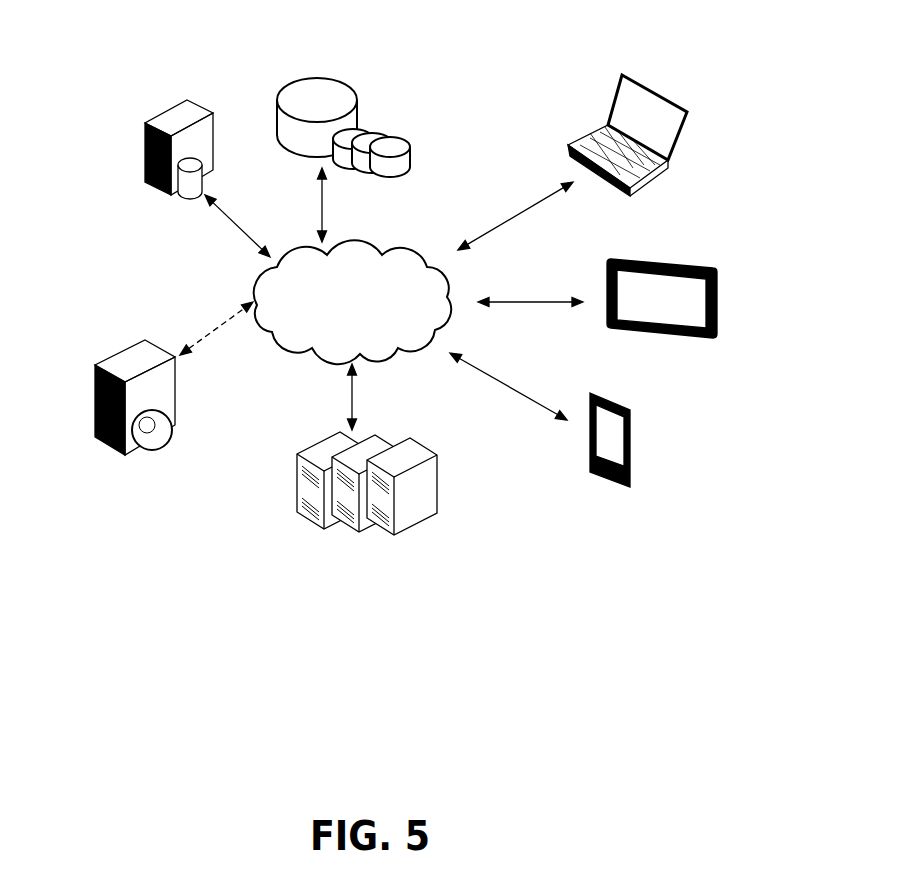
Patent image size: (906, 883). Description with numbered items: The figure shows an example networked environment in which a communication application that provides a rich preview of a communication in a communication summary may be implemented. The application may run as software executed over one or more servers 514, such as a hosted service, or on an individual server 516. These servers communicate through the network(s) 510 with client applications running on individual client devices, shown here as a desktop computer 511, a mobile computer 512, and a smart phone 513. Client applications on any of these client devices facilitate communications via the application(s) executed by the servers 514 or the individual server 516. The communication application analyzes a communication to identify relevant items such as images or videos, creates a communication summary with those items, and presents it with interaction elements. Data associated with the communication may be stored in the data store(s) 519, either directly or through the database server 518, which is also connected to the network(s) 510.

The network(s) 510 is at (361, 224).
The desktop computer 511 is at (666, 70).
The mobile computer 512 is at (699, 236).
The smart phone 513 is at (644, 402).
The servers 514 is at (317, 422).
The individual server 516 is at (112, 338).
The database server 518 is at (177, 216).
The data store(s) 519 is at (336, 50).